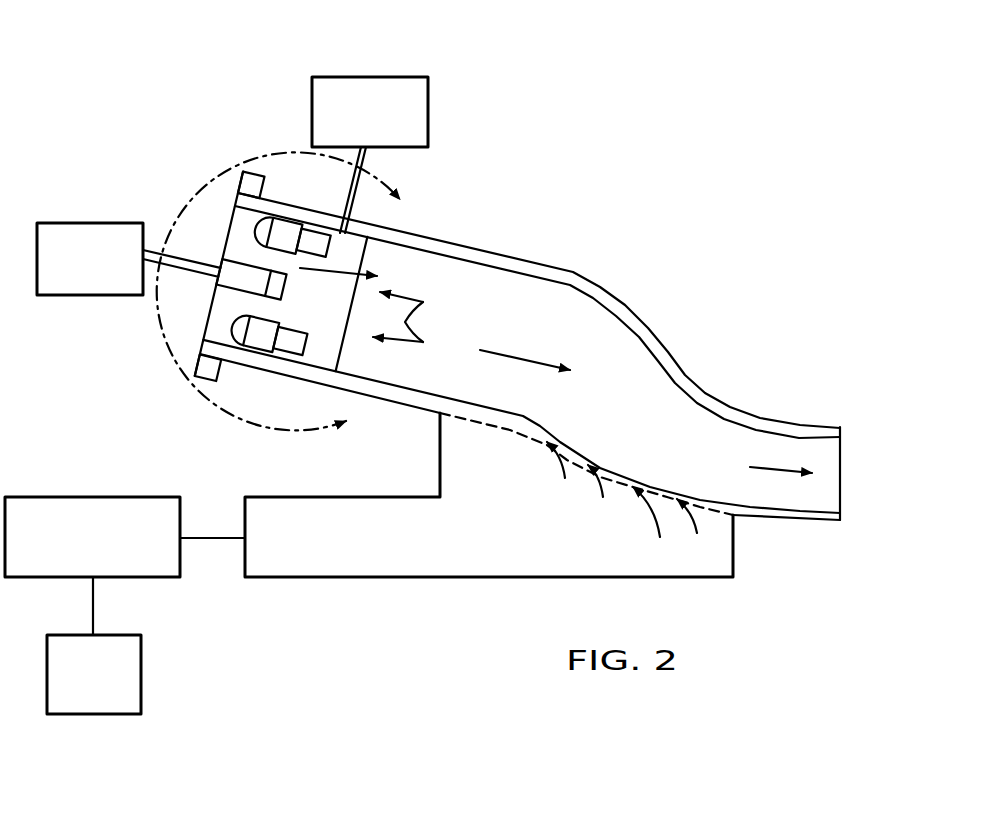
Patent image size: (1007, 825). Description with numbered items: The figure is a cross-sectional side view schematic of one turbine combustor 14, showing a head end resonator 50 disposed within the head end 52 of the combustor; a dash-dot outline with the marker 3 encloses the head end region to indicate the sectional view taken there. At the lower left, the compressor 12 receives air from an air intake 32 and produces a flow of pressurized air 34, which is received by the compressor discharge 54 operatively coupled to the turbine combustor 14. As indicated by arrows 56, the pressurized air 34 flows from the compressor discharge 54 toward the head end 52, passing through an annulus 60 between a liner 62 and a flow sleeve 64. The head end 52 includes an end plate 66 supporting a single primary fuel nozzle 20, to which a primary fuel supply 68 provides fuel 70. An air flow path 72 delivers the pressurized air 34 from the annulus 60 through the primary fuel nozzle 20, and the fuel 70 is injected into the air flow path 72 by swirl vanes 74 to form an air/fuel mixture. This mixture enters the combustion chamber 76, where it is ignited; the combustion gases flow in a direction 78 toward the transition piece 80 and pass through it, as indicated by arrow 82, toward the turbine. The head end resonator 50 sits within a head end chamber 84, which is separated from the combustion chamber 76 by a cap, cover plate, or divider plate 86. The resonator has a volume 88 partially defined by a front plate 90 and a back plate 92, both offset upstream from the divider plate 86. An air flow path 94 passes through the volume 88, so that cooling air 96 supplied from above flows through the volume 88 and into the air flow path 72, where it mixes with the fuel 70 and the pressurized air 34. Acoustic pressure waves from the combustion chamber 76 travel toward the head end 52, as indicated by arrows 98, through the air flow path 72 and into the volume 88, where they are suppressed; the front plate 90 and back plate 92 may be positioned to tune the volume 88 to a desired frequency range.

The section line of FIG. 3 is at (286, 302).
The compressor 12 is at (107, 496).
The turbine combustor 14 is at (599, 263).
The primary fuel nozzle 20 is at (250, 277).
The air intake 32 is at (143, 671).
The pressurized air 34 is at (208, 539).
The head end resonator 50 is at (288, 216).
The head end 52 is at (302, 188).
The compressor discharge 54 is at (490, 578).
The arrows 56 is at (570, 480).
The annulus 60 is at (688, 382).
The liner 62 is at (500, 272).
The flow sleeve 64 is at (488, 251).
The end plate 66 is at (223, 243).
The primary fuel supply 68 is at (85, 223).
The fuel 70 is at (186, 272).
The air flow path 72 is at (247, 208).
The swirl vanes 74 is at (355, 274).
The combustion chamber 76 is at (460, 372).
The direction 78 is at (518, 361).
The transition piece 80 is at (668, 374).
The arrow 82 is at (777, 472).
The head end chamber 84 is at (172, 349).
The divider plate 86 is at (356, 315).
The volume 88 is at (328, 235).
The front plate 90 is at (300, 242).
The back plate 92 is at (232, 212).
The air flow path 94 is at (355, 262).
The cooling air 96 is at (388, 76).
The arrows 98 is at (394, 244).